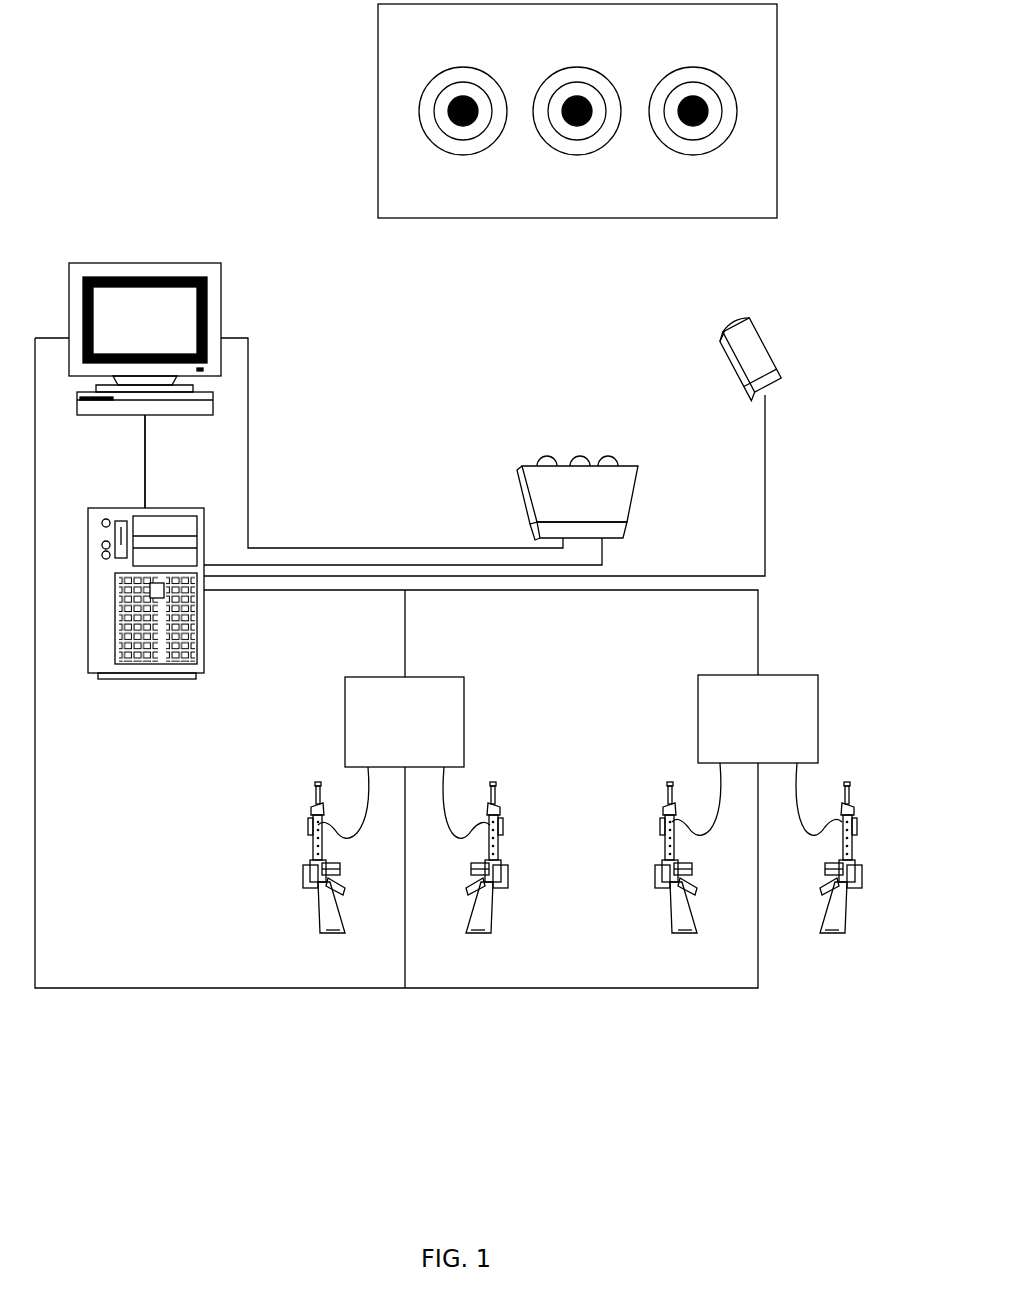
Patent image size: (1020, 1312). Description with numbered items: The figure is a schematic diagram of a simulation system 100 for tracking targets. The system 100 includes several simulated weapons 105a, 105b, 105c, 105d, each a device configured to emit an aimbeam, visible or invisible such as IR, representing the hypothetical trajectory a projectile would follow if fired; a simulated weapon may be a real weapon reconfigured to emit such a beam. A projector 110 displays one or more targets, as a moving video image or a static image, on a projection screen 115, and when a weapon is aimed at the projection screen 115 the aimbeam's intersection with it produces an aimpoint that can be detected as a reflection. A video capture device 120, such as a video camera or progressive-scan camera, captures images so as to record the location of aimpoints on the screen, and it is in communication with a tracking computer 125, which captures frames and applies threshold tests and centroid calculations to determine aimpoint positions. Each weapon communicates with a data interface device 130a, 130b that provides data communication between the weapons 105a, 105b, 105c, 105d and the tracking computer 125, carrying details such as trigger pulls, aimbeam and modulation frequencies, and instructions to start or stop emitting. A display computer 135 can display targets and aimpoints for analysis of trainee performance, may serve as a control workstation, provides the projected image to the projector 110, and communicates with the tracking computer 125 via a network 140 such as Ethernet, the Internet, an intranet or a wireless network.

The simulation system 100 is at (763, 1202).
The simulated weapon 105a is at (503, 875).
The simulated weapon 105b is at (308, 875).
The simulated weapon 105c is at (660, 872).
The simulated weapon 105d is at (855, 872).
The projector 110 is at (638, 502).
The projection screen 115 is at (779, 108).
The video capture device 120 is at (772, 362).
The tracking computer 125 is at (88, 592).
The data interface device 130a is at (464, 721).
The data interface device 130b is at (818, 718).
The display computer 135 is at (143, 262).
The network 140 is at (138, 440).